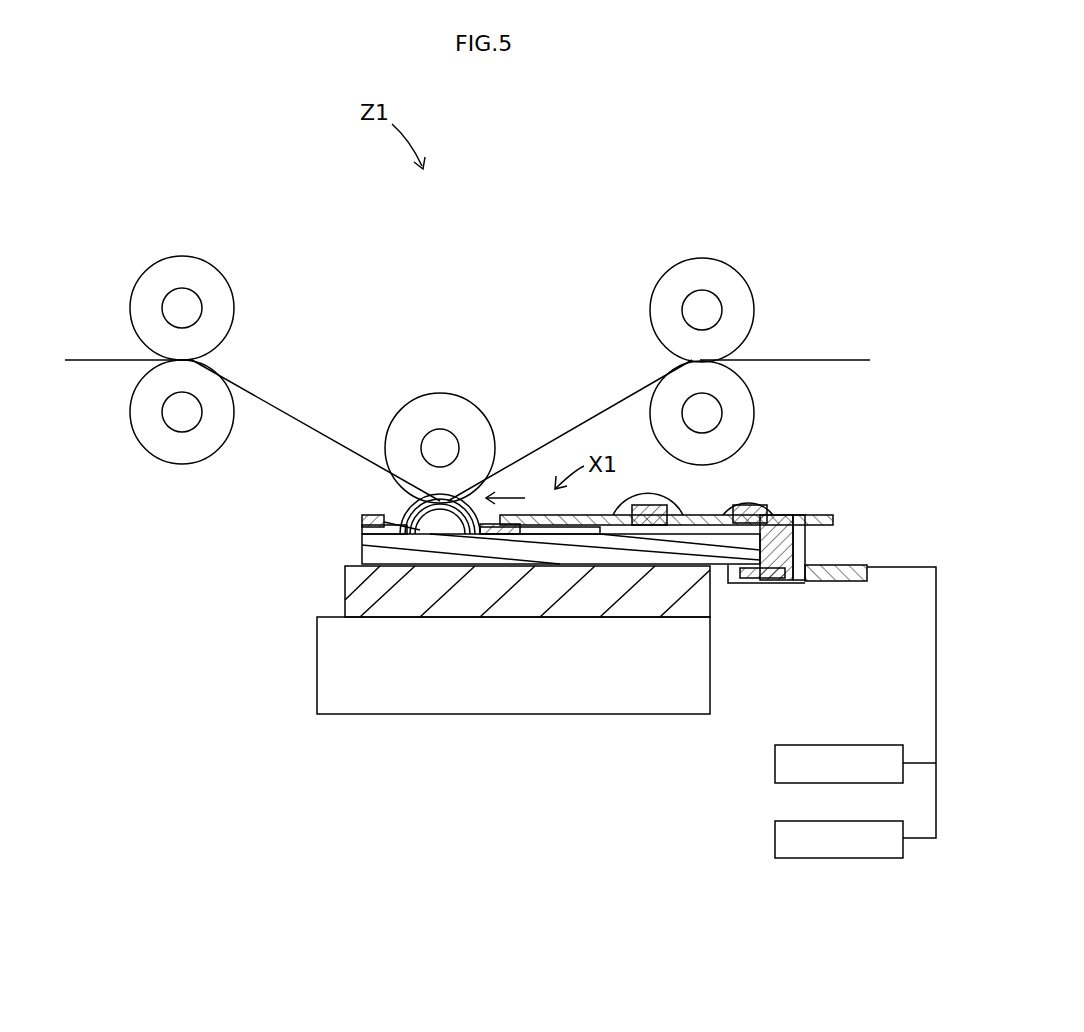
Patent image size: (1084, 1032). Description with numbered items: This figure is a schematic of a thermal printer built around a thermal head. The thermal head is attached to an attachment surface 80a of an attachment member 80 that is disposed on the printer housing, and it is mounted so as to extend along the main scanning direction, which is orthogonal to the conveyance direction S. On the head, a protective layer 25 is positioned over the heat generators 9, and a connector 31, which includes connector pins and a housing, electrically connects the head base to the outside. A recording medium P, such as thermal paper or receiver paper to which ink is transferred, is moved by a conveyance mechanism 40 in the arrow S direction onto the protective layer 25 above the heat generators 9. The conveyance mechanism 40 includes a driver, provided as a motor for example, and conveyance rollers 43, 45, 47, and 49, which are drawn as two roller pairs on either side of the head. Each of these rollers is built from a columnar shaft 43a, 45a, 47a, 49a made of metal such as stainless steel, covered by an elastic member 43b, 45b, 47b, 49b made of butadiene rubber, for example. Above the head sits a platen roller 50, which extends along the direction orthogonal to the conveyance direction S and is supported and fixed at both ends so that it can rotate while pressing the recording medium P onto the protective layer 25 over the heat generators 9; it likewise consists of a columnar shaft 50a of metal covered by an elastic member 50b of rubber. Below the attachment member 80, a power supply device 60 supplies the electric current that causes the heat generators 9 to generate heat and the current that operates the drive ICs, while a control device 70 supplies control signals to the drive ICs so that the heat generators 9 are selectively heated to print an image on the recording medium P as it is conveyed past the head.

The heat generators 9 is at (470, 492).
The protective layer 25 is at (402, 503).
The connector 31 is at (826, 514).
The conveyance mechanism 40 is at (215, 357).
The conveyance roller 43 is at (173, 256).
The shaft 43a is at (203, 275).
The elastic member 43b is at (182, 307).
The conveyance roller 45 is at (173, 461).
The shaft 45a is at (182, 412).
The elastic member 45b is at (232, 522).
The conveyance roller 47 is at (745, 278).
The shaft 47a is at (702, 310).
The elastic member 47b is at (740, 312).
The conveyance roller 49 is at (762, 413).
The shaft 49a is at (702, 413).
The elastic member 49b is at (720, 435).
The platen roller 50 is at (438, 391).
The shaft 50a is at (440, 448).
The elastic member 50b is at (498, 317).
The power supply device 60 is at (788, 762).
The control device 70 is at (788, 838).
The attachment member 80 is at (345, 665).
The attachment surface 80a is at (345, 613).
The recording medium P is at (322, 437).
The conveyance direction S is at (132, 347).